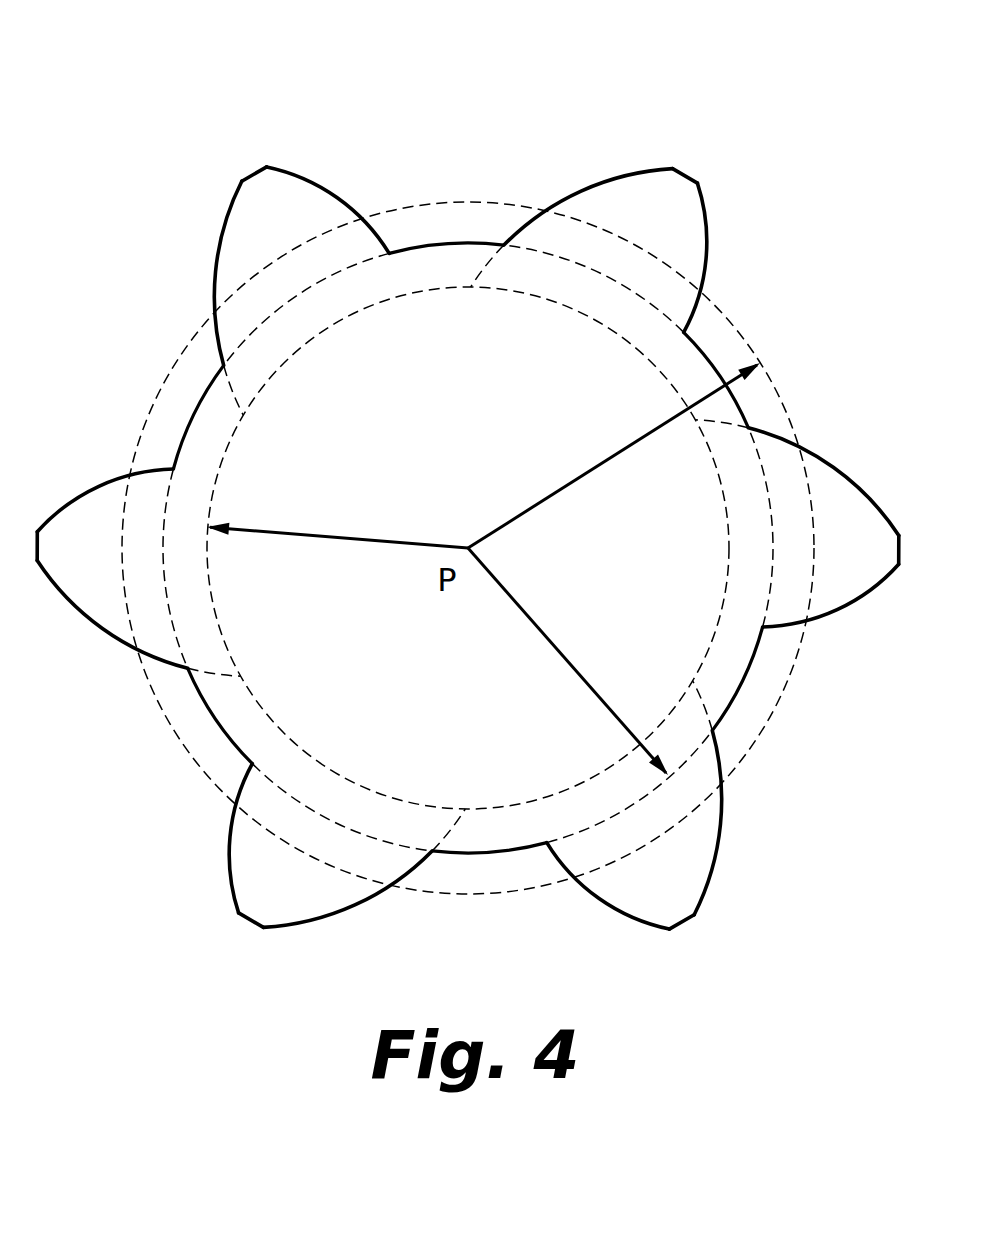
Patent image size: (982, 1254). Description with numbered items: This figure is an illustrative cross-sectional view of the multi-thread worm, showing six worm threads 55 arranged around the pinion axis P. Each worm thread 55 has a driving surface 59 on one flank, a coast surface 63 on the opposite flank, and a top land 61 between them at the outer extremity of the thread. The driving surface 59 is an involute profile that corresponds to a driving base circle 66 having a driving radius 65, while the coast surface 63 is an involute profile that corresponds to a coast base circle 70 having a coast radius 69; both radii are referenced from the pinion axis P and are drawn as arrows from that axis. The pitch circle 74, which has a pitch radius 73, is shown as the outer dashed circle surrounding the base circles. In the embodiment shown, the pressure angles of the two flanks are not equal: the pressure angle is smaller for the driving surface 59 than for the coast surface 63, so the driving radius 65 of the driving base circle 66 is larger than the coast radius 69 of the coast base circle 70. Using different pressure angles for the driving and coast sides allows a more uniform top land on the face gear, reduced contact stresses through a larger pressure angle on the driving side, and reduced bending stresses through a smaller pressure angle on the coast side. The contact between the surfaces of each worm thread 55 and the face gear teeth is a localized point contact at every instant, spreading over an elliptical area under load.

The worm thread 55 is at (430, 160).
The driving surface 59 is at (708, 227).
The top land 61 is at (690, 180).
The coast surface 63 is at (608, 183).
The driving radius 65 is at (550, 643).
The driving base circle 66 is at (742, 682).
The coast radius 69 is at (338, 533).
The coast base circle 70 is at (227, 443).
The pitch radius 73 is at (595, 470).
The pitch circle 74 is at (788, 410).